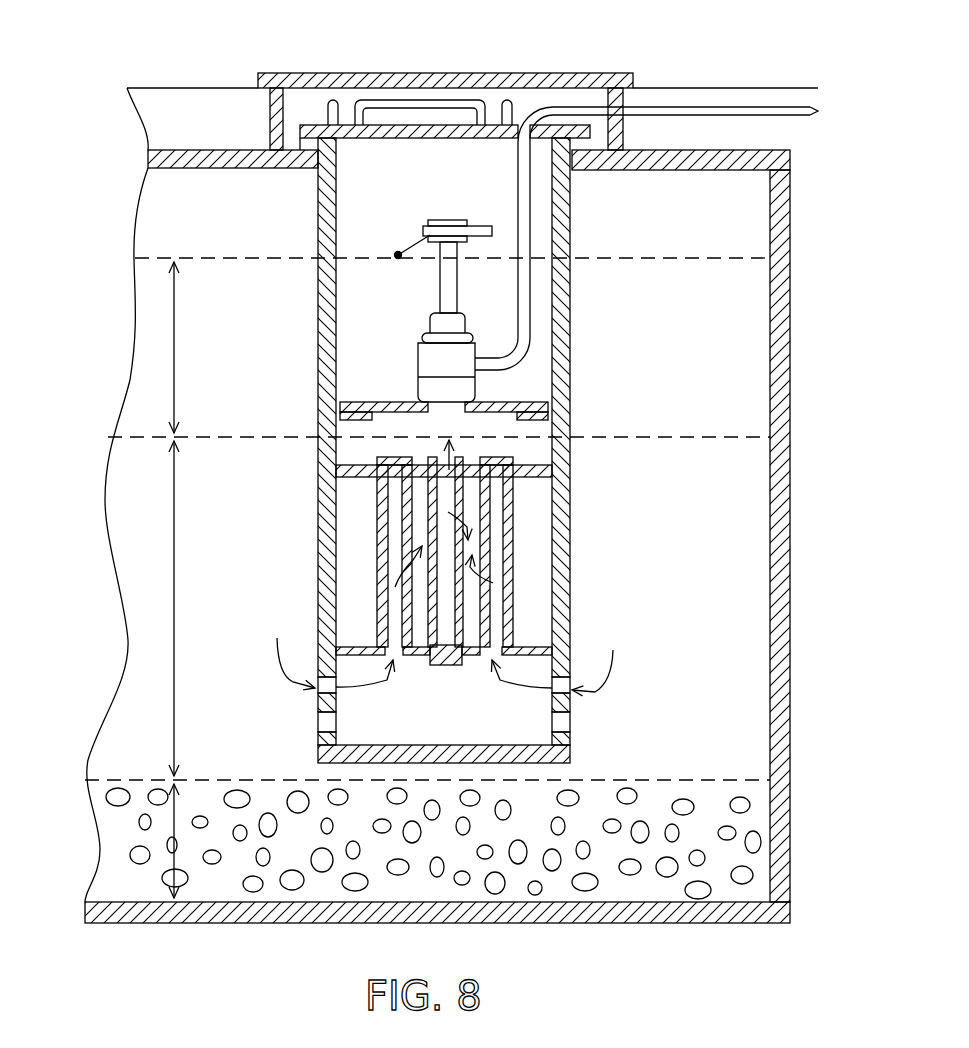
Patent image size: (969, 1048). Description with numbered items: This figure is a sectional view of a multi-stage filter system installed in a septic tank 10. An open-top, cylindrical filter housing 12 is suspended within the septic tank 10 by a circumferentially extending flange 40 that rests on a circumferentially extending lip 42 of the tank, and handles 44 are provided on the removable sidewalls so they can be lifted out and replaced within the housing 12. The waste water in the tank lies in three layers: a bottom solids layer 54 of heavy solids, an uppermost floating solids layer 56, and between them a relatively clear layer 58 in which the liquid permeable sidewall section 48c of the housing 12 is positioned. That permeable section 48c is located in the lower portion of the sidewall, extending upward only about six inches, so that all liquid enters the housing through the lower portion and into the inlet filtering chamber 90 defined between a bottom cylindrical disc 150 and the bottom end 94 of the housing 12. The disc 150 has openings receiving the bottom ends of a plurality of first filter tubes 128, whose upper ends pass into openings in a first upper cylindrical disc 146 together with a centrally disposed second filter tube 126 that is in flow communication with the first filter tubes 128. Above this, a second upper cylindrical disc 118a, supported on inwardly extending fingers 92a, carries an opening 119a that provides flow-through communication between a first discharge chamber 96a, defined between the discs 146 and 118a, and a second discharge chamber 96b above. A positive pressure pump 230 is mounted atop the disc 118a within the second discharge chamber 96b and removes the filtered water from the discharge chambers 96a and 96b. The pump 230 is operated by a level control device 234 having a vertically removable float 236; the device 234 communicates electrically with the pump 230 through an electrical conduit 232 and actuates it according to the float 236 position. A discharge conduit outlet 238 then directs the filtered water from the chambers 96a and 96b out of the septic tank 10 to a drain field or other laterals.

The septic tank 10 is at (794, 350).
The filter housing 12 is at (572, 568).
The flange 40 is at (317, 76).
The lip 42 is at (316, 155).
The handles 44 is at (333, 100).
The liquid permeable section 48c is at (562, 723).
The solids layer 54 is at (163, 833).
The floating solids layer 56 is at (170, 362).
The relatively clear layer 58 is at (168, 590).
The inlet filtering chamber 90 is at (470, 723).
The inwardly extending fingers 92a is at (350, 420).
The bottom end 94 is at (332, 762).
The first discharge chamber 96a is at (432, 452).
The second discharge chamber 96b is at (410, 367).
The second upper cylindrical disc 118a is at (470, 390).
The opening 119a is at (462, 387).
The second filter tube 126 is at (428, 495).
The first filter tubes 128 is at (513, 537).
The first upper cylindrical disc 146 is at (533, 465).
The bottom cylindrical disc 150 is at (527, 645).
The positive pressure pump 230 is at (503, 382).
The electrical conduit 232 is at (457, 278).
The level control device 234 is at (398, 255).
The float 236 is at (398, 255).
The discharge conduit outlet 238 is at (527, 203).